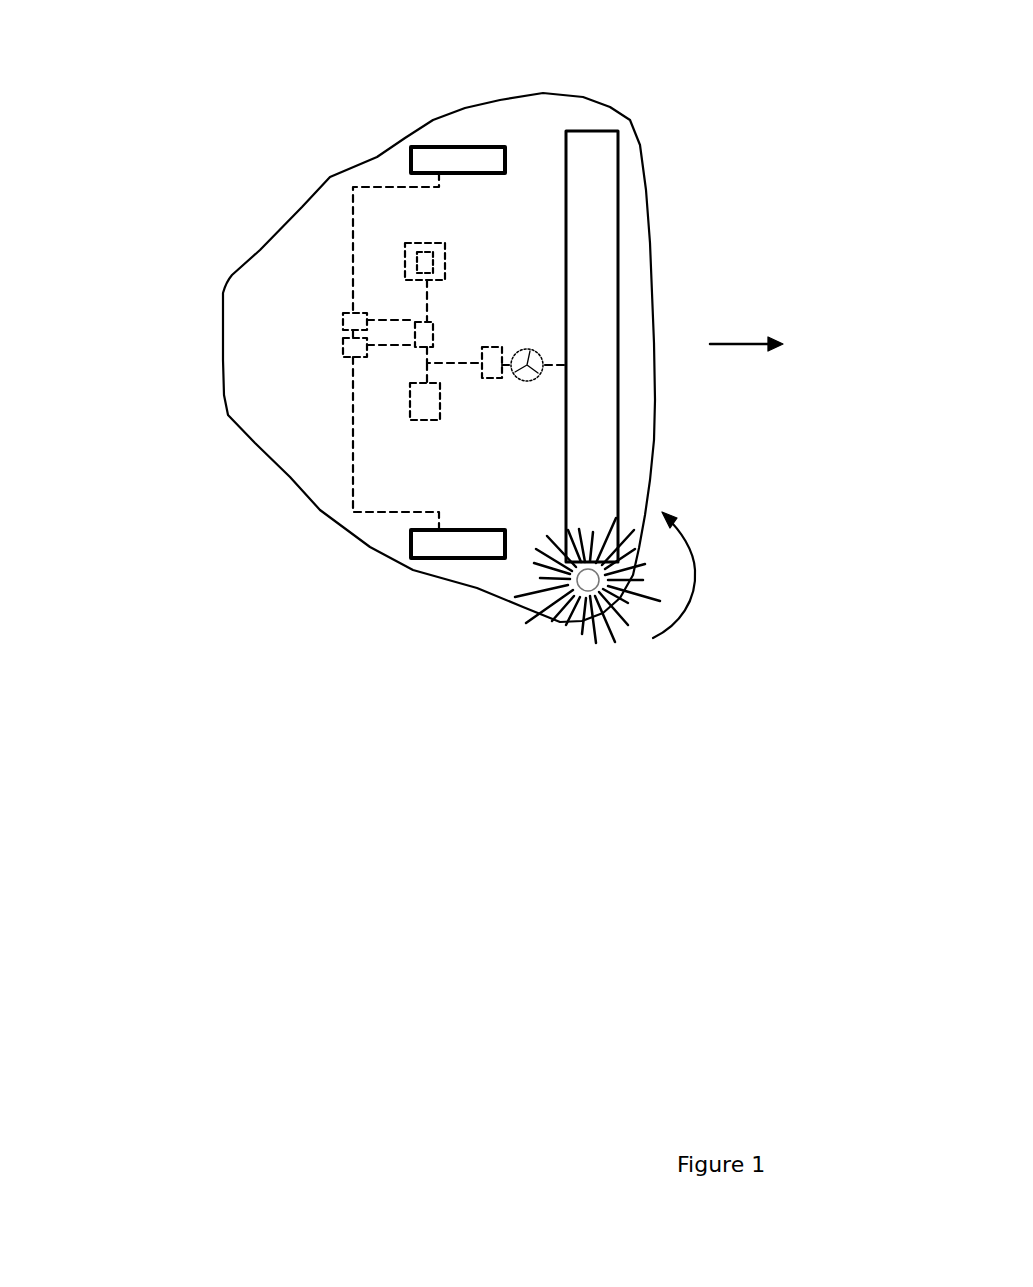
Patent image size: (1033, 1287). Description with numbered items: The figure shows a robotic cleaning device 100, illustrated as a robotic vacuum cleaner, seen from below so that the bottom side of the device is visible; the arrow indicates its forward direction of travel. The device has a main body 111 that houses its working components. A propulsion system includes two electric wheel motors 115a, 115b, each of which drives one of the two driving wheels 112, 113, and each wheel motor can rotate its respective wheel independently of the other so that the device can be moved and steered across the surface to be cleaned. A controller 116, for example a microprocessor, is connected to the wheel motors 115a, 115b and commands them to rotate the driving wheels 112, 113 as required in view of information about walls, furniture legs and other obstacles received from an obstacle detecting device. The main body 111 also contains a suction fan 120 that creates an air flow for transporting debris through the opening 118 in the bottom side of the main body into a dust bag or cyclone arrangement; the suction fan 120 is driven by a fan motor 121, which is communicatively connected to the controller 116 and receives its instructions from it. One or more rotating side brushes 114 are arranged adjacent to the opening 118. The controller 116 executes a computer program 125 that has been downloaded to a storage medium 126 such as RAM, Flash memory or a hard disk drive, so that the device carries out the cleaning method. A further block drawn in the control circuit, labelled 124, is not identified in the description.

The robotic cleaning device 100 is at (183, 122).
The main body 111 is at (318, 420).
The driving wheel 112 is at (442, 147).
The driving wheel 113 is at (440, 548).
The rotating side brush 114 is at (593, 575).
The wheel motor 115a is at (347, 315).
The wheel motor 115b is at (347, 343).
The controller 116 is at (428, 328).
The opening 118 is at (589, 131).
The suction fan 120 is at (533, 385).
The fan motor 121 is at (493, 372).
The battery 124 is at (432, 415).
The computer program 125 is at (422, 253).
The storage medium 126 is at (440, 247).